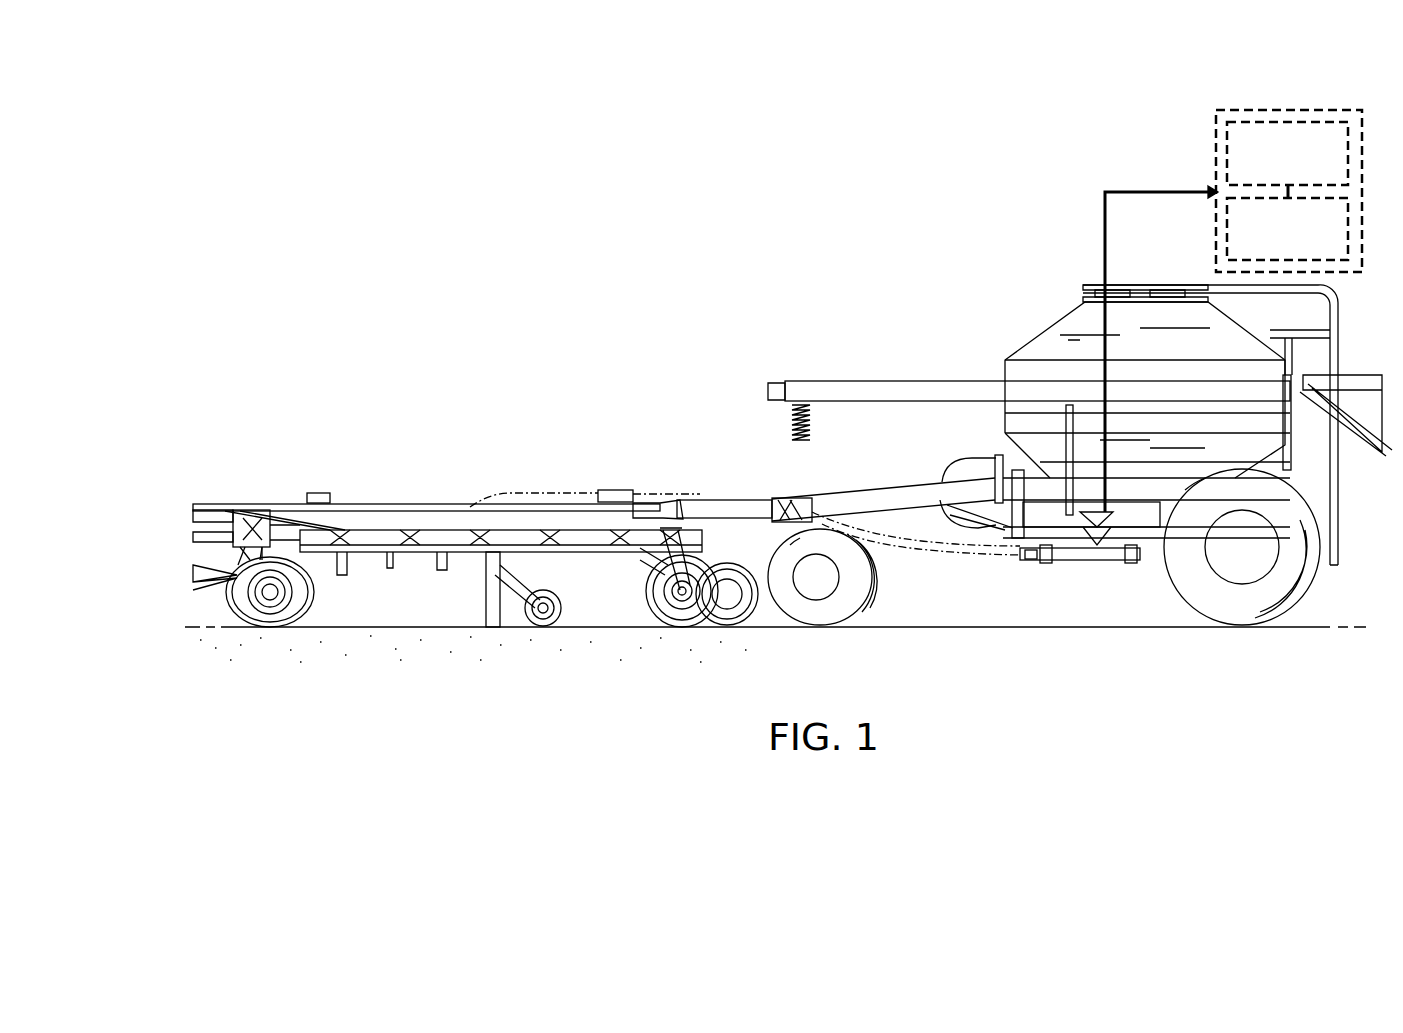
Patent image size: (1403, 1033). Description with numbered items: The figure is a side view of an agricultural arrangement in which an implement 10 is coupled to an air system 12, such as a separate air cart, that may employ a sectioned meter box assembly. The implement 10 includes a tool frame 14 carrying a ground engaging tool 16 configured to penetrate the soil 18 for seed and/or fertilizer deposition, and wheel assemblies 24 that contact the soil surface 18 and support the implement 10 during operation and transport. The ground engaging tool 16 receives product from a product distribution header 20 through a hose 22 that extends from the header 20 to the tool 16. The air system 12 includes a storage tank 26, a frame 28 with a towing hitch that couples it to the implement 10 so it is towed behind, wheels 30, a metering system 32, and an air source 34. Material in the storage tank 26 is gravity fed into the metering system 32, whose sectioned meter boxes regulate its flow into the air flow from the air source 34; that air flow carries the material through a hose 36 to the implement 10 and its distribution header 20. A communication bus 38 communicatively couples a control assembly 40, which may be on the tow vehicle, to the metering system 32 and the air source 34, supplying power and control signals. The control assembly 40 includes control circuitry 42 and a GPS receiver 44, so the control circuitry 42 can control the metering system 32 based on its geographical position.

The implement 10 is at (430, 458).
The air system 12 is at (1057, 264).
The tool frame 14 is at (478, 500).
The ground engaging tool 16 is at (488, 627).
The soil 18 is at (588, 627).
The product distribution header 20 is at (615, 488).
The hose 22 is at (556, 495).
The wheel assemblies 24 is at (268, 628).
The storage tank 26 is at (1070, 320).
The frame 28 is at (880, 480).
The wheels 30 is at (872, 580).
The metering system 32 is at (1103, 552).
The air source 34 is at (957, 465).
The hose 36 is at (943, 550).
The communication bus 38 is at (1104, 230).
The control assembly 40 is at (1358, 268).
The control circuitry 42 is at (1350, 150).
The GPS receiver 44 is at (1222, 232).